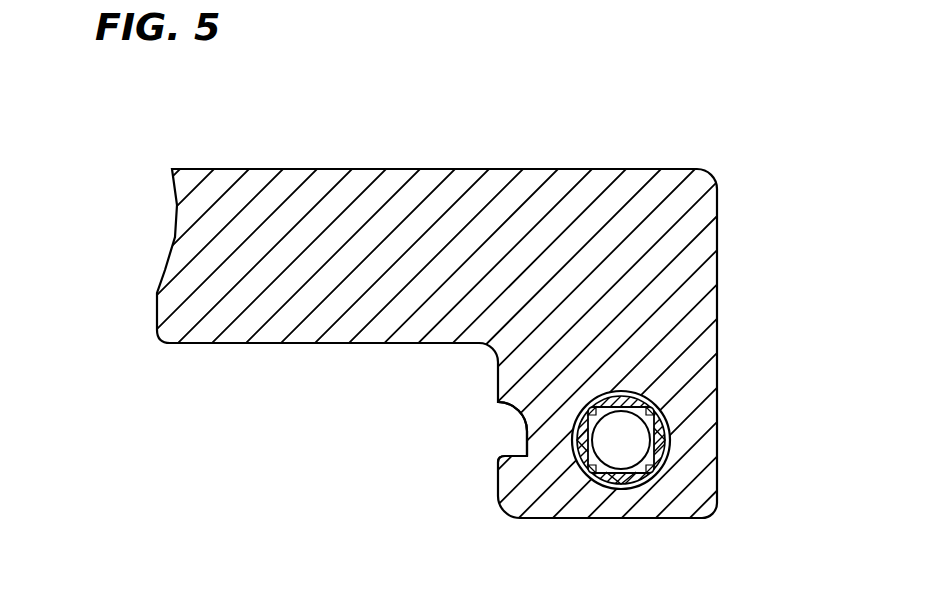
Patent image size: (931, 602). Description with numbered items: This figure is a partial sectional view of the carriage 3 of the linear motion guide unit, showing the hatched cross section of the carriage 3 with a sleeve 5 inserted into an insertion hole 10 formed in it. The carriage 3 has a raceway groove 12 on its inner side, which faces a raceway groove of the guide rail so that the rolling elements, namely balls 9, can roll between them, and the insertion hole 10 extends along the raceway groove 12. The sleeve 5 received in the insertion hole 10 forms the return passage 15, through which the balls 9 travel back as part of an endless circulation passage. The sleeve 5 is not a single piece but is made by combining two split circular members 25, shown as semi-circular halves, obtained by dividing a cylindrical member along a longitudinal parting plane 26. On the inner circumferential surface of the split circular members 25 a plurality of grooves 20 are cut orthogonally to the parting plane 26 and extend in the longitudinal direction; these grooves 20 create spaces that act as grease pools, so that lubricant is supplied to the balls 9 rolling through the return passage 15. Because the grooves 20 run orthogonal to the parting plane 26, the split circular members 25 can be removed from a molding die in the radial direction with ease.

The carriage 3 is at (433, 189).
The sleeve 5 is at (668, 420).
The rolling element (ball) 9 is at (596, 480).
The insertion hole 10 is at (624, 490).
The raceway groove 12 is at (525, 441).
The return passage 15 is at (662, 460).
The groove 20 is at (656, 398).
The split circular member 25 is at (657, 456).
The parting plane 26 is at (527, 456).